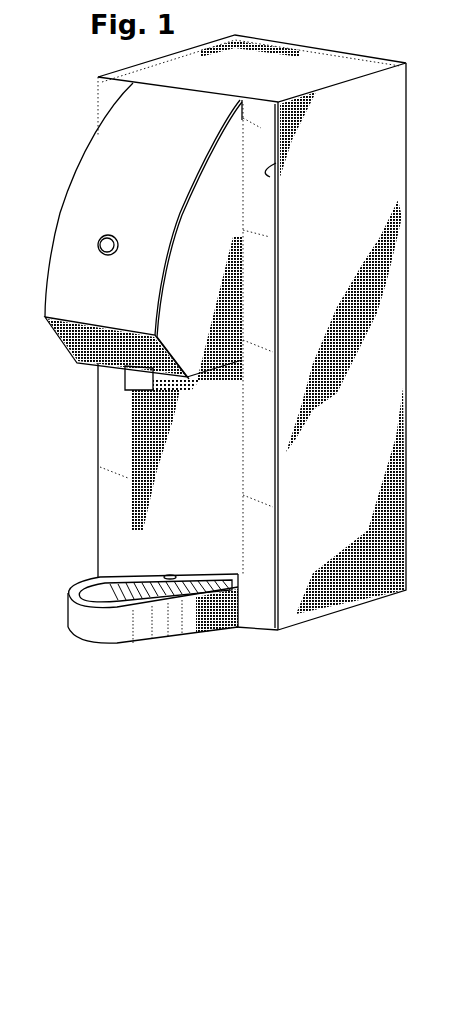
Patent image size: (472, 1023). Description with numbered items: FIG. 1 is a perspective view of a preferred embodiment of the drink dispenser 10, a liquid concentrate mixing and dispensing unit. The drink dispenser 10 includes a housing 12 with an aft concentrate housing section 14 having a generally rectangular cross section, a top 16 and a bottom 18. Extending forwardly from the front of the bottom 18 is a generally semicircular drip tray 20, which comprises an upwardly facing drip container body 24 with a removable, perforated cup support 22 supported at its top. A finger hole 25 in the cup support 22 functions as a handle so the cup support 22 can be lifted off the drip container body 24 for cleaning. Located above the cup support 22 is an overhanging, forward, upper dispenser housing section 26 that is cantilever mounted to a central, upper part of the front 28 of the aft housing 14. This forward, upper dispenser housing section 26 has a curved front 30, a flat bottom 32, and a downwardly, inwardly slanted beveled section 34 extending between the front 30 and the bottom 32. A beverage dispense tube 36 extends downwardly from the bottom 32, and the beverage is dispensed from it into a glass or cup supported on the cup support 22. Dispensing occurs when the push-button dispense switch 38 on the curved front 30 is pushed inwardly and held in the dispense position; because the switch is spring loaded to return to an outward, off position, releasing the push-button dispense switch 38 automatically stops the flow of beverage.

The drink dispenser 10 is at (280, 337).
The housing 12 is at (390, 392).
The aft concentrate housing section 14 is at (397, 283).
The top 16 is at (362, 55).
The bottom 18 is at (305, 623).
The drip tray 20 is at (136, 588).
The cup support 22 is at (98, 578).
The drip container body 24 is at (78, 613).
The finger hole 25 is at (172, 572).
The forward upper dispenser housing section 26 is at (134, 231).
The front 28 is at (279, 173).
The curved front 30 is at (73, 180).
The flat bottom 32 is at (214, 372).
The beveled section 34 is at (65, 346).
The beverage dispense tube 36 is at (124, 378).
The push-button dispense switch 38 is at (98, 242).